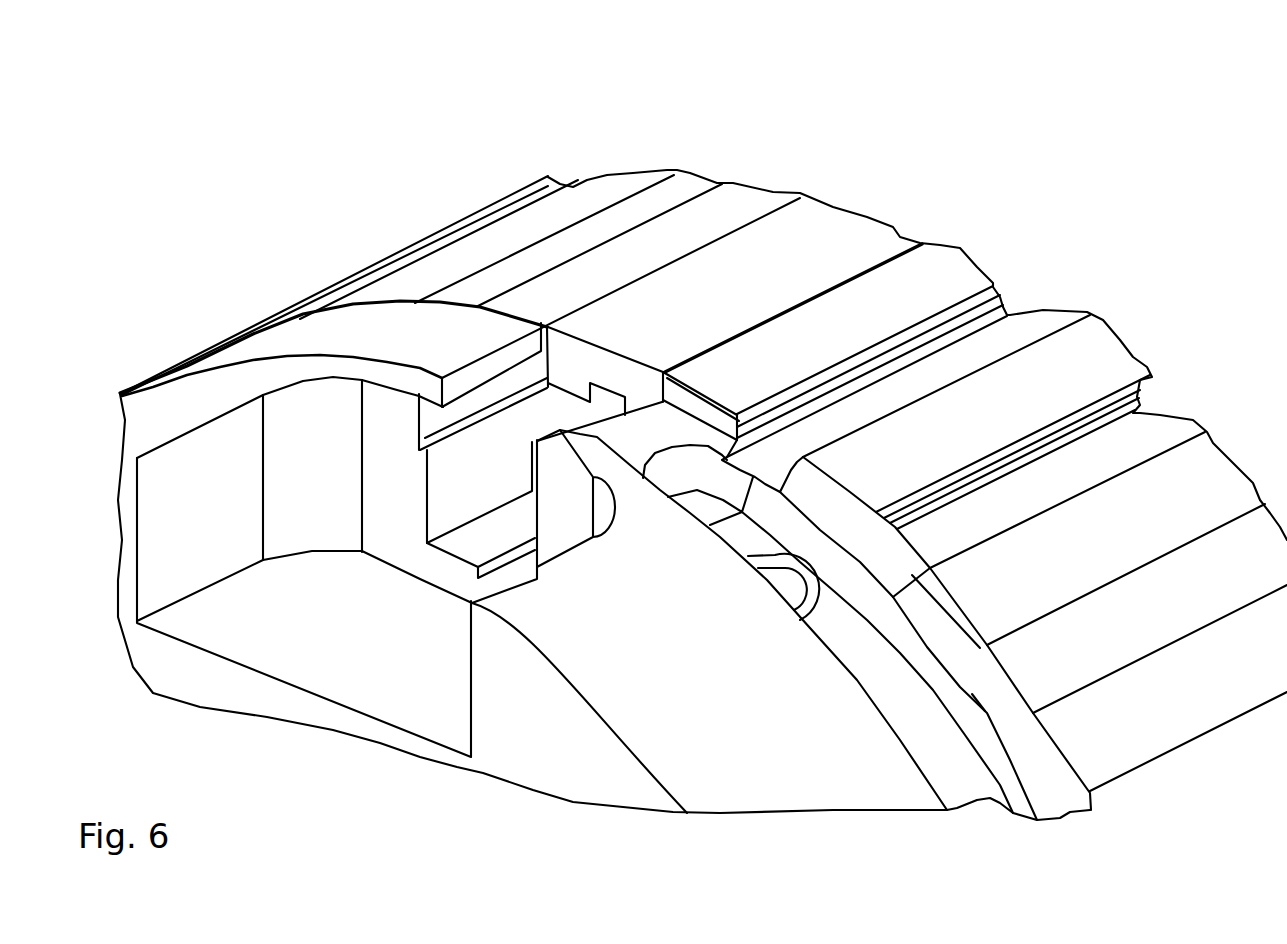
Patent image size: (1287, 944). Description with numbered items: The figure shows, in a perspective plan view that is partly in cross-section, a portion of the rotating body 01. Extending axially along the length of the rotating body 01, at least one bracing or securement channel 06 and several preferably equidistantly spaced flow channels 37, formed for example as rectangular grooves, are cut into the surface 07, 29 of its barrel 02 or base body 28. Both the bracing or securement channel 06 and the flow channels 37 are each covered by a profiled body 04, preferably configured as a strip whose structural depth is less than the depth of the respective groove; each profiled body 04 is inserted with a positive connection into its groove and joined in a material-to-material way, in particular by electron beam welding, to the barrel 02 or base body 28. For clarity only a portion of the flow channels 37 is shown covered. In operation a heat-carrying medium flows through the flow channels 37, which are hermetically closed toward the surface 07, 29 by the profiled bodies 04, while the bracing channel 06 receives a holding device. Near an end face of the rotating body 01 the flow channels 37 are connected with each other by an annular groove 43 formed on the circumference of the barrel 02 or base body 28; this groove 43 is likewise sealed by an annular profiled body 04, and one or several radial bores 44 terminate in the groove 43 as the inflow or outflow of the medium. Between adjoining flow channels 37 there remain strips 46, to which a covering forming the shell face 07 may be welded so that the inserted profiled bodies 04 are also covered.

The rotating body 01 is at (661, 72).
The barrel 02 is at (412, 595).
The base body 28 is at (577, 741).
The profiled body 04 is at (407, 350).
The bracing or securement channel 06 is at (504, 484).
The surface 07 is at (709, 620).
The surface 29 is at (687, 621).
The flow channel 37 is at (792, 468).
The annular groove 43 is at (889, 676).
The radial bore 44 is at (800, 578).
The strip 46 is at (947, 451).